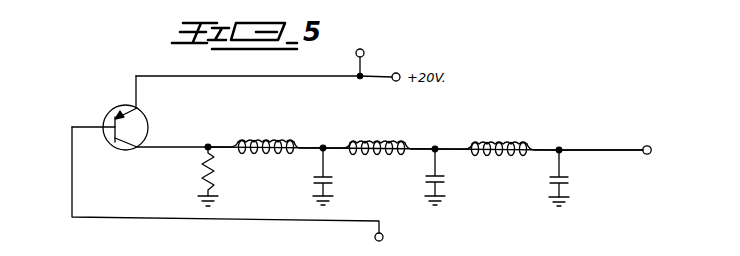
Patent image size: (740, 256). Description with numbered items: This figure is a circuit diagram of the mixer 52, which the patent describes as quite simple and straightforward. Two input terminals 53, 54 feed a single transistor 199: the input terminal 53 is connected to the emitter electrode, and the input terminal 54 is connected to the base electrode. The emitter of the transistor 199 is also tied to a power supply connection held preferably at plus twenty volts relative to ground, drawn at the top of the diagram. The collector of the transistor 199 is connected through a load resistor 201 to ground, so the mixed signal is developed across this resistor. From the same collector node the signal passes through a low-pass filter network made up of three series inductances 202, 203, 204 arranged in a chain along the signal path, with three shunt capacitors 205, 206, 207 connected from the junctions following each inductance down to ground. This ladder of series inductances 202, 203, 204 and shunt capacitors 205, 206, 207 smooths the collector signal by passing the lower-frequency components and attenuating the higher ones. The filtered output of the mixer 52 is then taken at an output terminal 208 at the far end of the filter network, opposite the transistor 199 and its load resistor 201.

The mixer 52 is at (568, 112).
The input terminal 53 is at (364, 50).
The input terminal 54 is at (384, 237).
The transistor 199 is at (147, 124).
The load resistor 201 is at (204, 177).
The series inductance 202 is at (267, 128).
The series inductance 203 is at (378, 134).
The series inductance 204 is at (505, 133).
The shunt capacitor 205 is at (316, 178).
The shunt capacitor 206 is at (430, 182).
The shunt capacitor 207 is at (553, 178).
The output terminal 208 is at (657, 138).